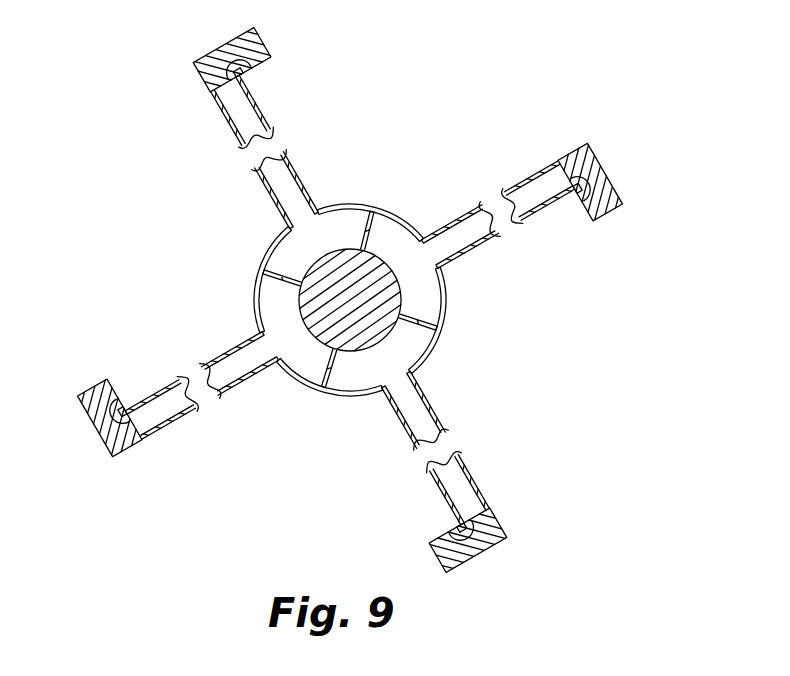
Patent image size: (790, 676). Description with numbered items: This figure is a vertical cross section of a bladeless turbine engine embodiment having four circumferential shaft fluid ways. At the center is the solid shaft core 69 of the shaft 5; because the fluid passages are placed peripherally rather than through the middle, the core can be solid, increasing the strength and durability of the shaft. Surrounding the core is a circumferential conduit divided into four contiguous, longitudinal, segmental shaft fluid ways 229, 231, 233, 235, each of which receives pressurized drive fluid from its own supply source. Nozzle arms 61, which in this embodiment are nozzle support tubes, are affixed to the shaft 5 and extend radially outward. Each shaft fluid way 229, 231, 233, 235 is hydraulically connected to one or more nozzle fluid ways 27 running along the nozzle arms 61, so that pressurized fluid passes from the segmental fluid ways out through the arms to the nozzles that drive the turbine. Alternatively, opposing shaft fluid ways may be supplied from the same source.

The shaft 5 is at (445, 288).
The nozzle fluid way 27 is at (242, 112).
The nozzle arm 61 is at (262, 185).
The shaft core 69 is at (362, 318).
The segmental shaft fluid way 229 is at (444, 316).
The segmental shaft fluid way 231 is at (357, 218).
The segmental shaft fluid way 233 is at (258, 315).
The segmental shaft fluid way 235 is at (340, 381).